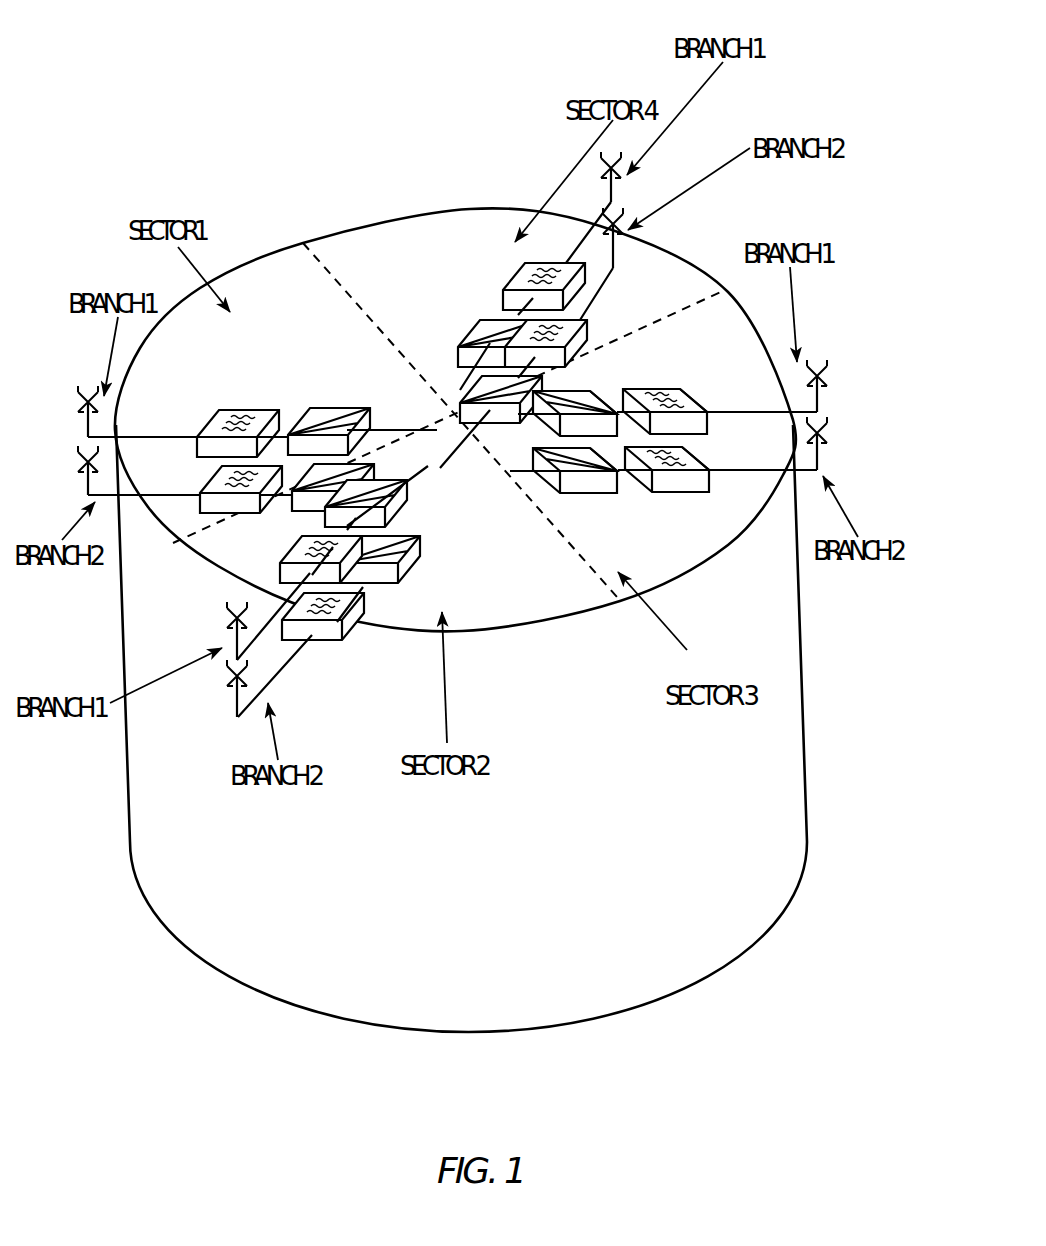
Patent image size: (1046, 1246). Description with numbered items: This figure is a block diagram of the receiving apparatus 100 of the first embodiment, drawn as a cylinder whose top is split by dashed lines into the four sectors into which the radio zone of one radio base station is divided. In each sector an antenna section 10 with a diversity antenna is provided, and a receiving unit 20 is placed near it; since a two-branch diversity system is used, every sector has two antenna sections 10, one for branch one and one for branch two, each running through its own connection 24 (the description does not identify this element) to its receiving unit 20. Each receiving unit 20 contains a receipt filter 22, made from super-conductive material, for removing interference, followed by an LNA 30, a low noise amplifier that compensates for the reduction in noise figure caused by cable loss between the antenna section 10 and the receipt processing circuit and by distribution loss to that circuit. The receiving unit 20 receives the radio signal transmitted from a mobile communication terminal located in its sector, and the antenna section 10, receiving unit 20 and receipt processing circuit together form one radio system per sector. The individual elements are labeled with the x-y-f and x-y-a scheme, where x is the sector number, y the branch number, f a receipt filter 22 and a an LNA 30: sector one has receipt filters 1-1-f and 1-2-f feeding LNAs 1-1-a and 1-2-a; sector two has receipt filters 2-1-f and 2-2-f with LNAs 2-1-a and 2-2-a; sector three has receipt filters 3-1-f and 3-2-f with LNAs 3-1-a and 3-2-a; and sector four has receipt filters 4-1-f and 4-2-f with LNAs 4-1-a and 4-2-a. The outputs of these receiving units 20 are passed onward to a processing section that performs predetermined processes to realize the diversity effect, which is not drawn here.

The antenna section 10 is at (88, 430).
The receiving unit 20 is at (440, 408).
The receipt filter 22 is at (436, 408).
The transmission line 24 is at (176, 437).
The LNA (low noise amplifier) 30 is at (435, 414).
The receiving apparatus 100 is at (476, 1032).
The receipt filter (sector one, branch one) 1-1-f is at (225, 410).
The receipt filter (sector one, branch two) 1-2-f is at (214, 478).
The LNA (sector one, branch one) 1-1-a is at (350, 410).
The LNA (sector one, branch two) 1-2-a is at (297, 512).
The receipt filter (sector two, branch one) 2-1-f is at (340, 540).
The receipt filter (sector two, branch two) 2-2-f is at (342, 633).
The LNA (sector two, branch one) 2-1-a is at (385, 484).
The LNA (sector two, branch two) 2-2-a is at (412, 540).
The receipt filter (sector three, branch one) 3-1-f is at (676, 392).
The receipt filter (sector three, branch two) 3-2-f is at (690, 485).
The LNA (sector three, branch one) 3-1-a is at (624, 371).
The LNA (sector three, branch two) 3-2-a is at (584, 495).
The receipt filter (sector four, branch one) 4-1-f is at (527, 283).
The receipt filter (sector four, branch two) 4-2-f is at (587, 323).
The LNA (sector four, branch one) 4-1-a is at (460, 343).
The LNA (sector four, branch two) 4-2-a is at (462, 400).